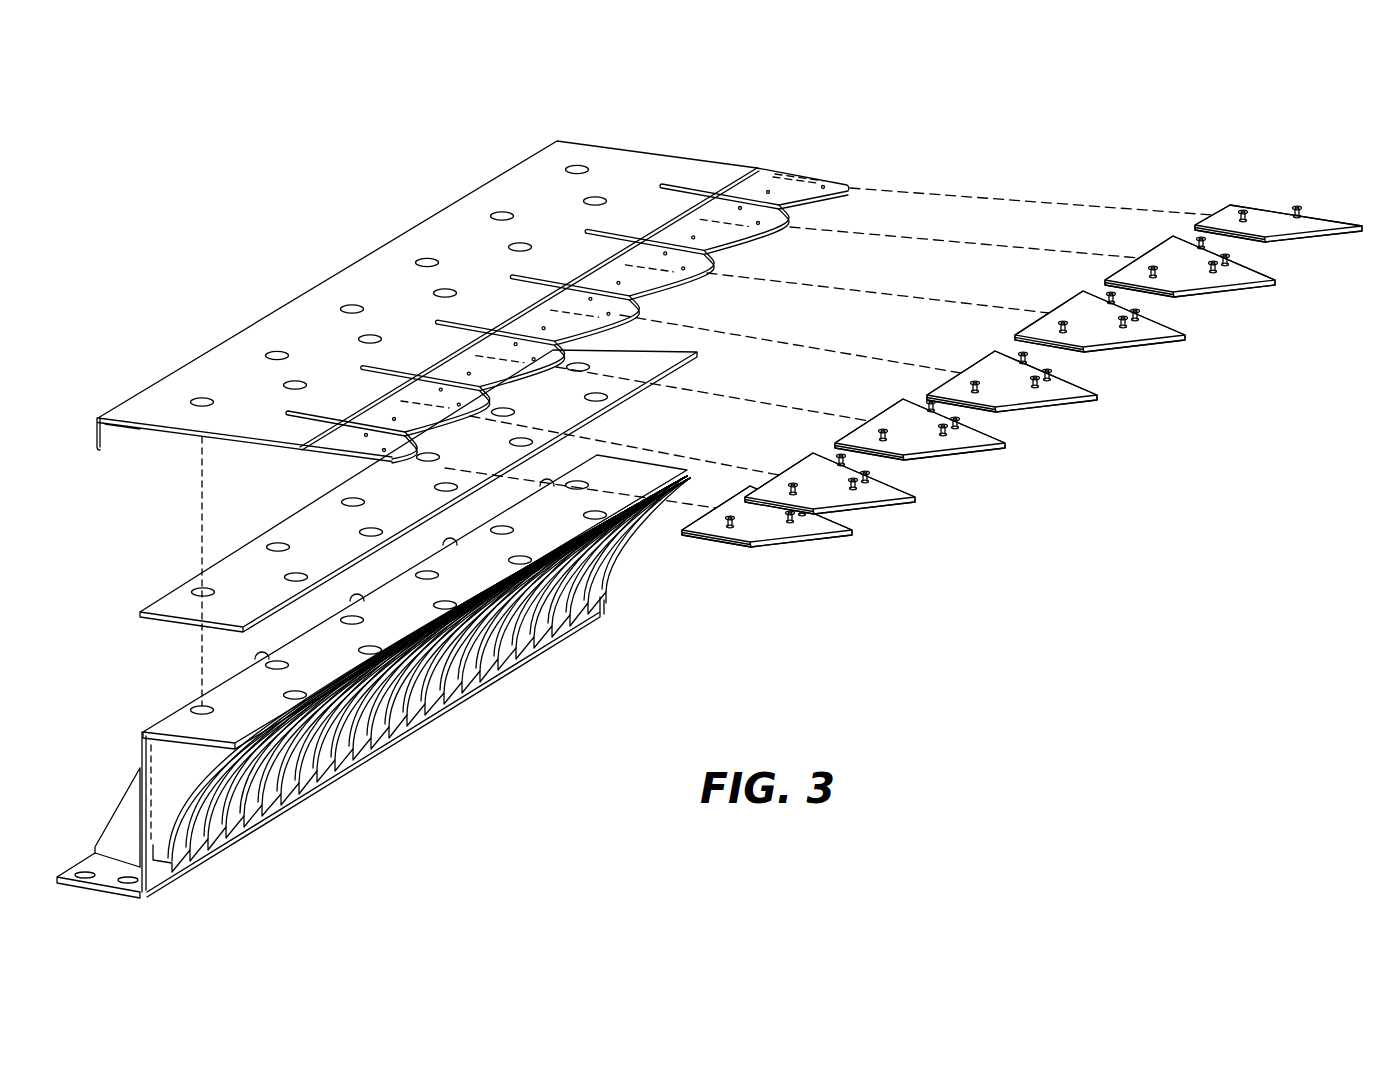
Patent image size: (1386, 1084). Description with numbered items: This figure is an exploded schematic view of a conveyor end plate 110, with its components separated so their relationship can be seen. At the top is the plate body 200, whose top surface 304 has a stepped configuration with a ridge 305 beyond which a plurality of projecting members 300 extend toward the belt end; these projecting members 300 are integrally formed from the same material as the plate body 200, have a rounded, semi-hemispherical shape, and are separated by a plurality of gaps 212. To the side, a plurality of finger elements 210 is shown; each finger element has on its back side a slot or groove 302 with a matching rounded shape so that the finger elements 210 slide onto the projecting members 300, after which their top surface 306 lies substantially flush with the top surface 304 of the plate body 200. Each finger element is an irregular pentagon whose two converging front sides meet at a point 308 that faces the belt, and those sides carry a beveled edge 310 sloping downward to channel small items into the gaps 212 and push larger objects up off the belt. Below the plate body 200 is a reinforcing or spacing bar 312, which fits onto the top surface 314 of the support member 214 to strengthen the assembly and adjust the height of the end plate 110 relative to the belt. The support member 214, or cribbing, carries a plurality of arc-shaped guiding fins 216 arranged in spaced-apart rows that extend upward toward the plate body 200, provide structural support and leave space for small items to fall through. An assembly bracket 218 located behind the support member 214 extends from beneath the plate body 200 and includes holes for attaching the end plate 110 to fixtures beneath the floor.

The conveyor end plate 110 is at (232, 158).
The plate body 200 is at (475, 282).
The plurality of finger elements 210 is at (1022, 376).
The plurality of gaps 212 is at (623, 220).
The support member 214 is at (363, 676).
The plurality of guiding fins 216 is at (376, 744).
The assembly bracket 218 is at (117, 837).
The plurality of projecting members 300 is at (554, 293).
The slot or groove 302 is at (987, 412).
The top surface 304 is at (318, 330).
The ridge 305 is at (762, 165).
The top surface 306 is at (958, 438).
The point 308 is at (958, 454).
The beveled edge 310 is at (942, 455).
The reinforcing or spacing bar 312 is at (177, 592).
The top surface 314 is at (230, 703).